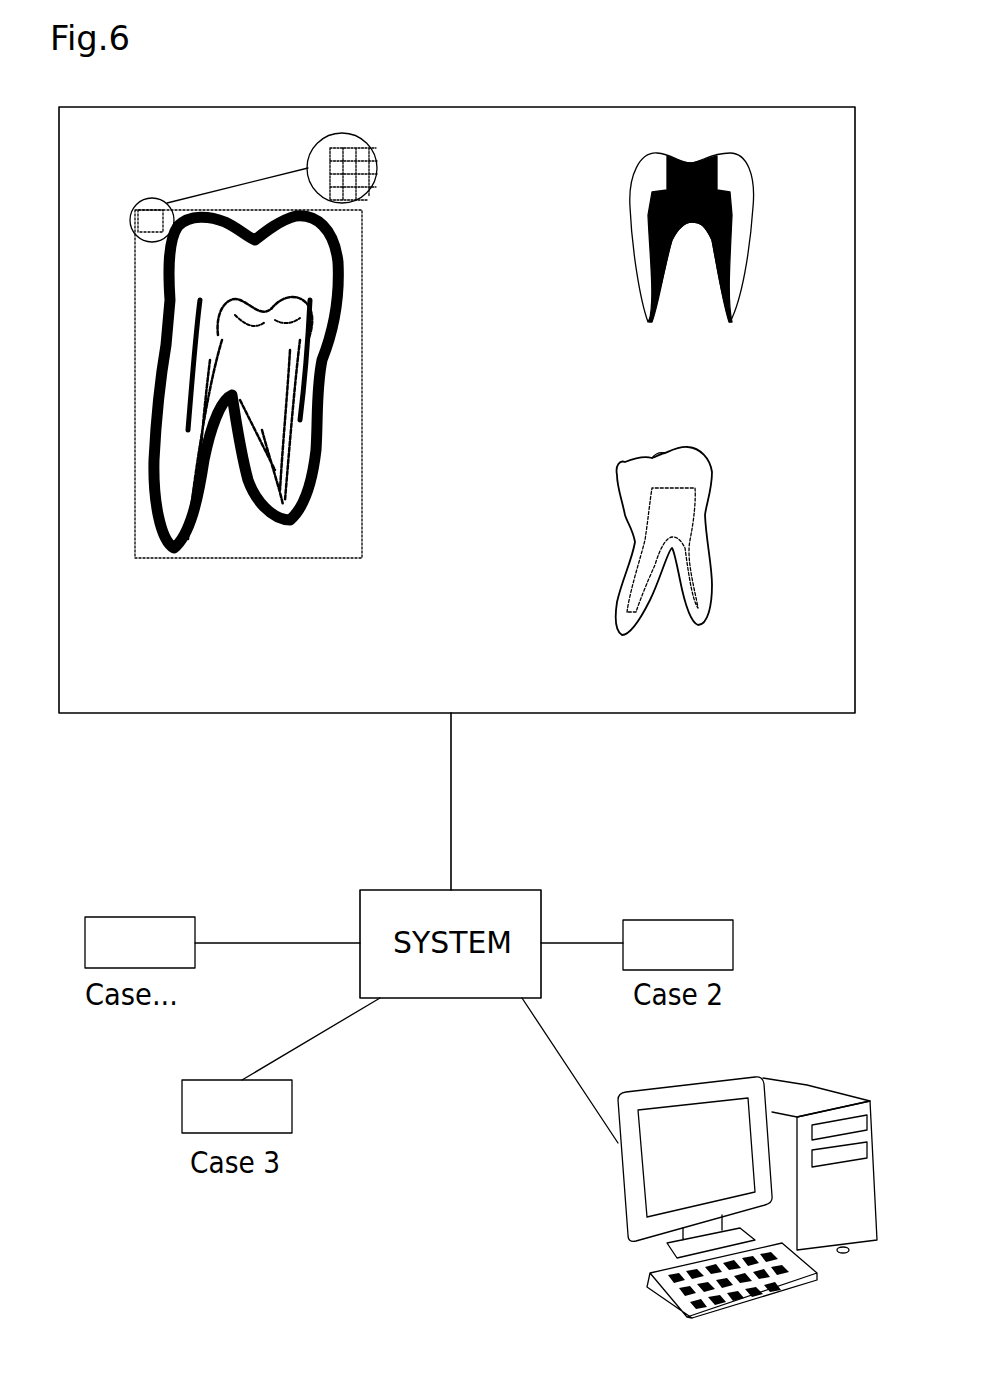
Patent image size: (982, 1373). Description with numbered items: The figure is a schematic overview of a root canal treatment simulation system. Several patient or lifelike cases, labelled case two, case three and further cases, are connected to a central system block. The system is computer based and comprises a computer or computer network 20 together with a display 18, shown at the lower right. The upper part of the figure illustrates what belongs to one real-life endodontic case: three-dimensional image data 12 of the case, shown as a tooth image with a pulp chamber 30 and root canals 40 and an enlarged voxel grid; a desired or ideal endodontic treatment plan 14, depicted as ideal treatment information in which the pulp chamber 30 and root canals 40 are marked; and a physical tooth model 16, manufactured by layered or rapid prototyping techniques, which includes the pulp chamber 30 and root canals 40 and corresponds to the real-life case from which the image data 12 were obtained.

The 3D image data 12 is at (258, 378).
The ideal endodontic treatment plan 14 is at (758, 196).
The physical tooth model 16 is at (712, 505).
The display 18 is at (673, 1197).
The computer or computer network 20 is at (710, 1164).
The pulp chamber 30 is at (265, 335).
The root canals 40 is at (175, 443).